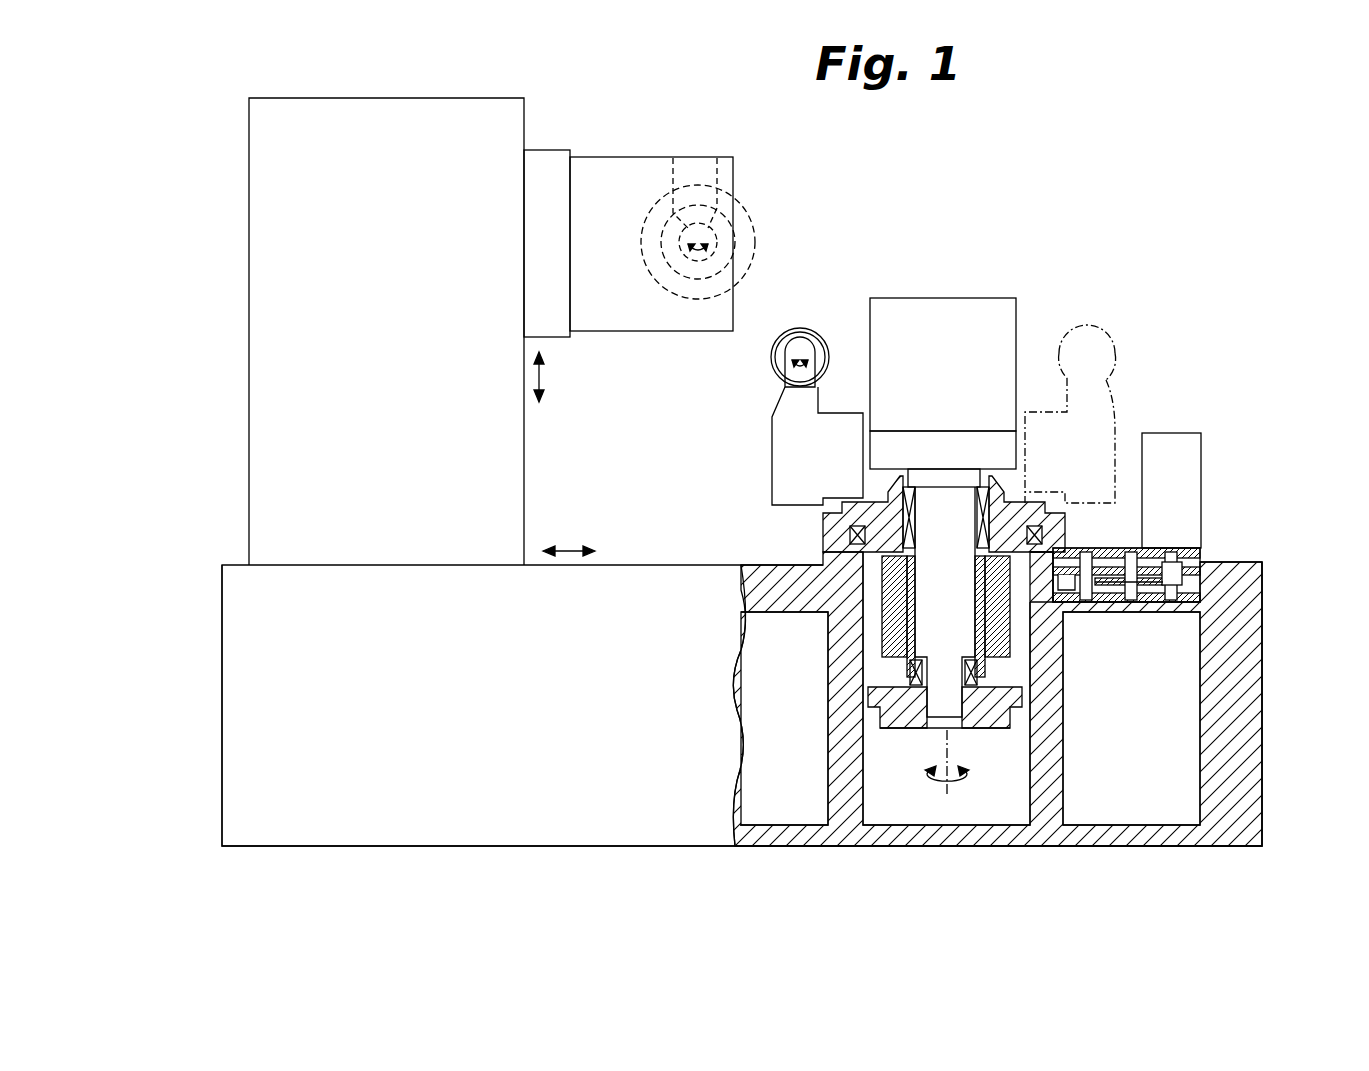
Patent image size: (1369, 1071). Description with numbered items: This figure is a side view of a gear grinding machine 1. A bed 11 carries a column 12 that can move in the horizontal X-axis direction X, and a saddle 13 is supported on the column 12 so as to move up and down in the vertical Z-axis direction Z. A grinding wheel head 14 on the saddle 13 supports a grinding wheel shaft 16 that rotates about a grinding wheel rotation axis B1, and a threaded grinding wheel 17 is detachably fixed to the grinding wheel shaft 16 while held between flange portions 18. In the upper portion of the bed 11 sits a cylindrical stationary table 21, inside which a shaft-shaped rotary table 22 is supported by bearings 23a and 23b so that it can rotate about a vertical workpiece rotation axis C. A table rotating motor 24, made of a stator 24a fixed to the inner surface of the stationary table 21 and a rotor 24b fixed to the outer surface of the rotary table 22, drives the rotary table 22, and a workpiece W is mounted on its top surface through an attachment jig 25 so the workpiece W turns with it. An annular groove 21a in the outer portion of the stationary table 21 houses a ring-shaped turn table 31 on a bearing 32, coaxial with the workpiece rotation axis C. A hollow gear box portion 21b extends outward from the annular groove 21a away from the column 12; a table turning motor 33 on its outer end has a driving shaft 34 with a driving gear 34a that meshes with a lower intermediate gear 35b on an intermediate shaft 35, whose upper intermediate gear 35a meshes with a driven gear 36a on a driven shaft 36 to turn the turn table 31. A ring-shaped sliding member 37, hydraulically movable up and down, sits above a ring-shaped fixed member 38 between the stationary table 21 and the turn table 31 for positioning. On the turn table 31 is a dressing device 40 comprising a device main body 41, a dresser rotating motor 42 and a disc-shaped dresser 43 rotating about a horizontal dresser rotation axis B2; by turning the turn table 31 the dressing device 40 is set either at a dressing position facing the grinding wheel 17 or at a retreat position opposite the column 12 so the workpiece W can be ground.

The gear grinding machine 1 is at (1020, 192).
The bed 11 is at (222, 660).
The column 12 is at (249, 253).
The saddle 13 is at (546, 150).
The grinding wheel head 14 is at (600, 157).
The grinding wheel shaft 16 is at (672, 158).
The threaded grinding wheel 17 is at (745, 215).
The flange portions 18 is at (717, 158).
The stationary table 21 is at (994, 527).
The annular groove 21a is at (826, 612).
The gear box portion 21b is at (1202, 552).
The rotary table 22 is at (935, 730).
The bearing 23a is at (1002, 478).
The bearing 23b is at (975, 690).
The table rotating motor 24 is at (888, 670).
The stator 24a is at (905, 672).
The rotor 24b is at (887, 648).
The attachment jig 25 is at (1017, 447).
The turn table 31 is at (822, 531).
The bearing 32 is at (862, 541).
The table turning motor 33 is at (1201, 470).
The driving shaft 34 is at (1187, 584).
The driving gear 34a is at (1192, 583).
The intermediate shaft 35 is at (1147, 614).
The upper intermediate gear 35a is at (1153, 582).
The lower intermediate gear 35b is at (1105, 586).
The driven shaft 36 is at (1100, 577).
The driven gear 36a is at (1067, 576).
The sliding member 37 is at (1086, 552).
The fixed member 38 is at (1040, 602).
The dressing device 40 is at (908, 375).
The device main body 41 is at (770, 374).
The dresser rotating motor 42 is at (803, 345).
The dresser 43 is at (828, 340).
The grinding wheel rotation axis B1 is at (700, 242).
The dresser rotation axis B2 is at (792, 340).
The workpiece W is at (992, 298).
The workpiece rotation axis C is at (947, 775).
The Z-axis direction Z is at (549, 377).
The X-axis direction X is at (569, 538).